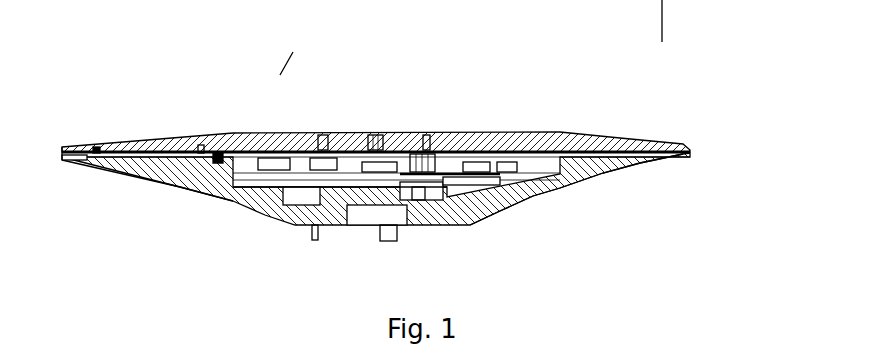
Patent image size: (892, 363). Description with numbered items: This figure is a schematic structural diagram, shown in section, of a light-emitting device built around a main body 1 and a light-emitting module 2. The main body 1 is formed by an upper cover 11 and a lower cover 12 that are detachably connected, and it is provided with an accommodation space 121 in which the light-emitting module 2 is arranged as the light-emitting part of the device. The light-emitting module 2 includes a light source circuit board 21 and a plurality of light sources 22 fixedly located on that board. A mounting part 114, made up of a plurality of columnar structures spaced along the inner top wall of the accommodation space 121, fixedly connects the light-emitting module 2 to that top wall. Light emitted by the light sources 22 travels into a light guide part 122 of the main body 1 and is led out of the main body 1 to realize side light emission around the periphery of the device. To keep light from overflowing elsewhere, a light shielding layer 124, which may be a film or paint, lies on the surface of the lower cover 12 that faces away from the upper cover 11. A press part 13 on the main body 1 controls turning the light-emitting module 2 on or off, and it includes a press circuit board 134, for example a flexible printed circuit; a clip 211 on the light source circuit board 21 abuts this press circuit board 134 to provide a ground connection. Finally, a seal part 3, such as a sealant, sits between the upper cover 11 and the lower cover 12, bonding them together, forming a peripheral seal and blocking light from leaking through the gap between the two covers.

The main body 1 is at (431, 166).
The upper cover 11 is at (403, 122).
The mounting part 114 is at (335, 150).
The lower cover 12 is at (407, 166).
The accommodation space 121 is at (220, 150).
The light guide part 122 is at (153, 183).
The light shielding layer 124 is at (620, 240).
The press part 13 is at (136, 121).
The press circuit board 134 is at (201, 147).
The light-emitting module 2 is at (336, 192).
The light source circuit board 21 is at (247, 156).
The light sources 22 is at (233, 200).
The clip 211 is at (333, 113).
The seal part 3 is at (75, 149).